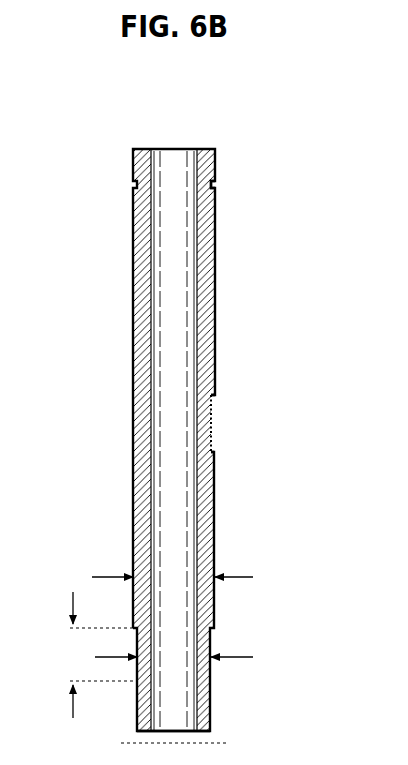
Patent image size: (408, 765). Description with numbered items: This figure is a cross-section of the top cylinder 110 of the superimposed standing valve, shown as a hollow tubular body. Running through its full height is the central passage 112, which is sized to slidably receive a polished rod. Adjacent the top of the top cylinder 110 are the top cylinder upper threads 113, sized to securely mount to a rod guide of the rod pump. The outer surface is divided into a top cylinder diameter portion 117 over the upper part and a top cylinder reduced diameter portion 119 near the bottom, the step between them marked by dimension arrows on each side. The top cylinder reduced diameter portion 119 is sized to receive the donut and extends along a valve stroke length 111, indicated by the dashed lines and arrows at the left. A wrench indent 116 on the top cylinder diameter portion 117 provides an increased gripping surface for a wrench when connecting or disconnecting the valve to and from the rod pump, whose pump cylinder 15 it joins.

The top cylinder 110 is at (216, 350).
The central passage 112 is at (172, 168).
The top cylinder upper threads 113 is at (216, 158).
The wrench indent 116 is at (212, 437).
The top cylinder diameter portion 117 is at (188, 577).
The top cylinder reduced diameter portion 119 is at (188, 657).
The valve stroke length 111 is at (72, 600).
The pump cylinder 15 is at (211, 703).